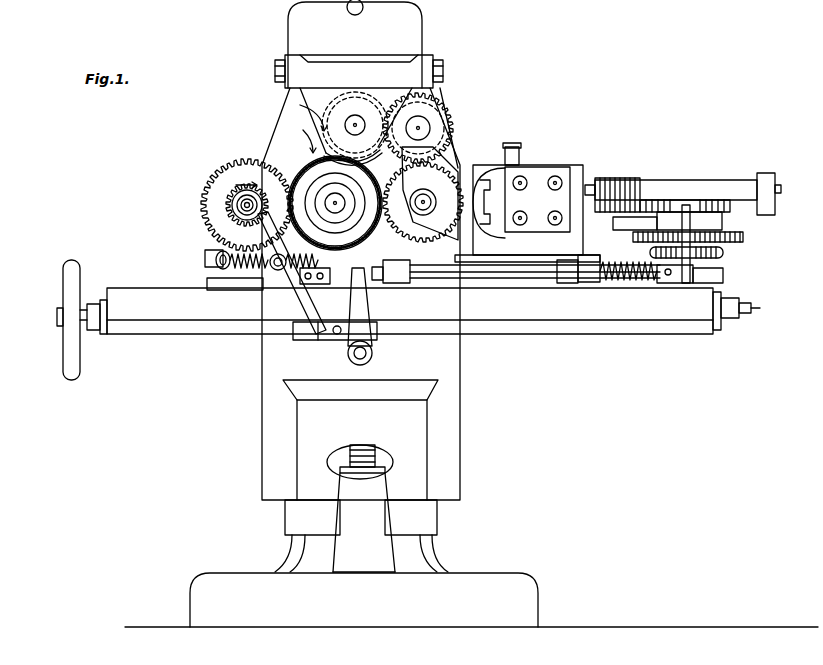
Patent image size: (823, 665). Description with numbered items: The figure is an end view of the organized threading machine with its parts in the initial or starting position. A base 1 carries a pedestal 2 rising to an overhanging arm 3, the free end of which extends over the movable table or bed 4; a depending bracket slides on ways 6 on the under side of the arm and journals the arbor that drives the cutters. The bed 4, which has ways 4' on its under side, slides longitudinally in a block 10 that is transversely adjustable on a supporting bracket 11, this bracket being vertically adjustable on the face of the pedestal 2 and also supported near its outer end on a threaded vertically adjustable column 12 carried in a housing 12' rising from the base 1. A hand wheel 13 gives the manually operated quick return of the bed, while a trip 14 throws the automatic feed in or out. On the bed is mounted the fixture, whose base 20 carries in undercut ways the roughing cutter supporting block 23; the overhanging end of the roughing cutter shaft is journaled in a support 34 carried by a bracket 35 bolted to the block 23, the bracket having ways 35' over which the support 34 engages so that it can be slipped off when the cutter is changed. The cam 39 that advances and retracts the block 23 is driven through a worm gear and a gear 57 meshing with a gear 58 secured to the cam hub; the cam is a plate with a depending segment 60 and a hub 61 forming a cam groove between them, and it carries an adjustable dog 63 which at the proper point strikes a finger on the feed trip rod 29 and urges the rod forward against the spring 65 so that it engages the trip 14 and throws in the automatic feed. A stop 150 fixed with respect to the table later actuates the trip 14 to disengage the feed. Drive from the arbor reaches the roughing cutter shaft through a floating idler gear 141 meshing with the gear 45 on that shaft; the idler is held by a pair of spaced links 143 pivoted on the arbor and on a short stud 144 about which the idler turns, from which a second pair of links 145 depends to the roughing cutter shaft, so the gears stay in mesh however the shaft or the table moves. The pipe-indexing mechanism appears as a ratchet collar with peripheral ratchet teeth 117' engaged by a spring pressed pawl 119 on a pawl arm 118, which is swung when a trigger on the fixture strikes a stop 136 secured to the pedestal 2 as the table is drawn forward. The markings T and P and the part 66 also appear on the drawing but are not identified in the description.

The base 1 is at (533, 593).
The pedestal 2 is at (418, 548).
The overhanging arm 3 is at (359, 44).
The movable table or bed 4 is at (410, 302).
The ways 4' is at (720, 322).
The ways 6 is at (370, 62).
The block 10 is at (458, 412).
The supporting bracket 11 is at (360, 451).
The threaded vertically adjustable column 12 is at (364, 519).
The housing 12' is at (364, 557).
The hand wheel 13 is at (75, 368).
The trip 14 is at (366, 300).
The base 20 is at (210, 284).
The roughing cutter supporting block 23 is at (578, 170).
The feed trip rod 29 is at (486, 282).
The support 34 is at (448, 224).
The bracket 35 is at (537, 189).
The ways 35' is at (485, 192).
The cam 39 is at (683, 186).
The gear 45 is at (448, 160).
The gear 57 is at (344, 118).
The gear 58 is at (744, 237).
The depending segment 60 is at (620, 195).
The hub 61 is at (730, 204).
The dog 63 is at (763, 180).
The spring 65 is at (640, 284).
The pinion 66 is at (724, 252).
The ratchet teeth 117' is at (230, 205).
The pawl arm 118 is at (236, 246).
The spring pressed pawl 119 is at (212, 212).
The stop 136 is at (290, 306).
The floating idler gear 141 is at (421, 127).
The pair of spaced links 143 is at (425, 82).
The short shaft or stud 144 is at (433, 108).
The pair of links 145 is at (441, 138).
The stop 150 is at (316, 285).
The tension direction T is at (302, 115).
The pull direction P is at (297, 138).